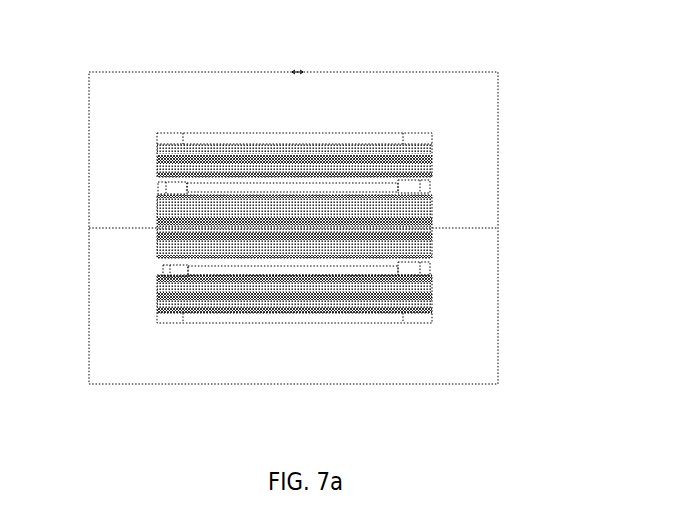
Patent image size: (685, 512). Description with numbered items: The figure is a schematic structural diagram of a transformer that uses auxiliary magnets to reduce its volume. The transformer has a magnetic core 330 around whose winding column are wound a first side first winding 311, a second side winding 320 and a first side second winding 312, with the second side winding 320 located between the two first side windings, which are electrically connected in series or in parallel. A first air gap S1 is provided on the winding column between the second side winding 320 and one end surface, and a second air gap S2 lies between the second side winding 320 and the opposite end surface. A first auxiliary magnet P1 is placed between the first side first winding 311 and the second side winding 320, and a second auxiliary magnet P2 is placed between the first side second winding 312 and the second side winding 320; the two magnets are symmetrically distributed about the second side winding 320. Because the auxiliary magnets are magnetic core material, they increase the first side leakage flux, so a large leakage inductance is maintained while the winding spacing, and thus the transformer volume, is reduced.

The first side first winding 311 is at (205, 152).
The first side second winding 312 is at (390, 288).
The second side winding 320 is at (368, 215).
The magnetic core 330 is at (265, 93).
The first auxiliary magnet P1 is at (190, 187).
The second auxiliary magnet P2 is at (405, 268).
The first air gap S1 is at (325, 185).
The second air gap S2 is at (248, 272).